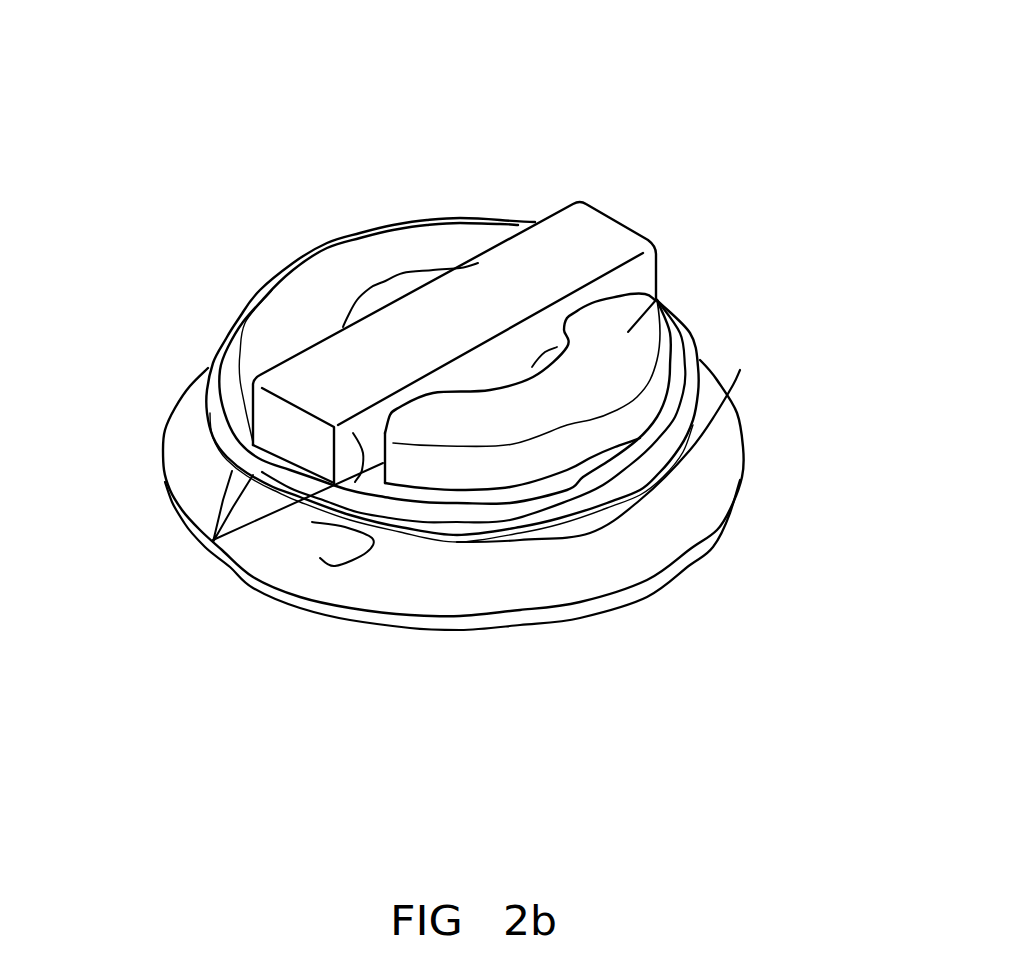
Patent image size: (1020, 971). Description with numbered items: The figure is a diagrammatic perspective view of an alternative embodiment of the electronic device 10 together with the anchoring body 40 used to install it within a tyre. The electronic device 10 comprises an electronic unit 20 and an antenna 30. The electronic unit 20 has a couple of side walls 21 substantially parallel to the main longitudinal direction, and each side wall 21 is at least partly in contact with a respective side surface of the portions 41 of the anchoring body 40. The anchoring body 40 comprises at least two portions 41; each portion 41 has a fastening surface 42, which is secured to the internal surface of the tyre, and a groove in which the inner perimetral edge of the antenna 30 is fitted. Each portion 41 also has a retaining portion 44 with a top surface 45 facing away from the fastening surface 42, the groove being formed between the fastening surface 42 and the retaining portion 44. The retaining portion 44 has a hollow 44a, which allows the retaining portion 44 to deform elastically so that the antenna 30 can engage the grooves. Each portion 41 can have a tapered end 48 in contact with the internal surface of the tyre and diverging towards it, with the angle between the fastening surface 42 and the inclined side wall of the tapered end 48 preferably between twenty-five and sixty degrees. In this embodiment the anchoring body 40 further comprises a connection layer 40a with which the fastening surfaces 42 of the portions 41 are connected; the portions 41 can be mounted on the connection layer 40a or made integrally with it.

The electronic device 10 is at (606, 208).
The electronic unit 20 is at (488, 275).
The side wall 21 is at (553, 213).
The antenna 30 is at (555, 515).
The anchoring body 40 is at (543, 627).
The connection layer 40a is at (413, 622).
The portion 41 is at (273, 287).
The fastening surface 42 is at (190, 523).
The retaining portion 44 is at (240, 350).
The hollow 44a is at (392, 298).
The top surface 45 is at (330, 277).
The tapered end 48 is at (193, 470).